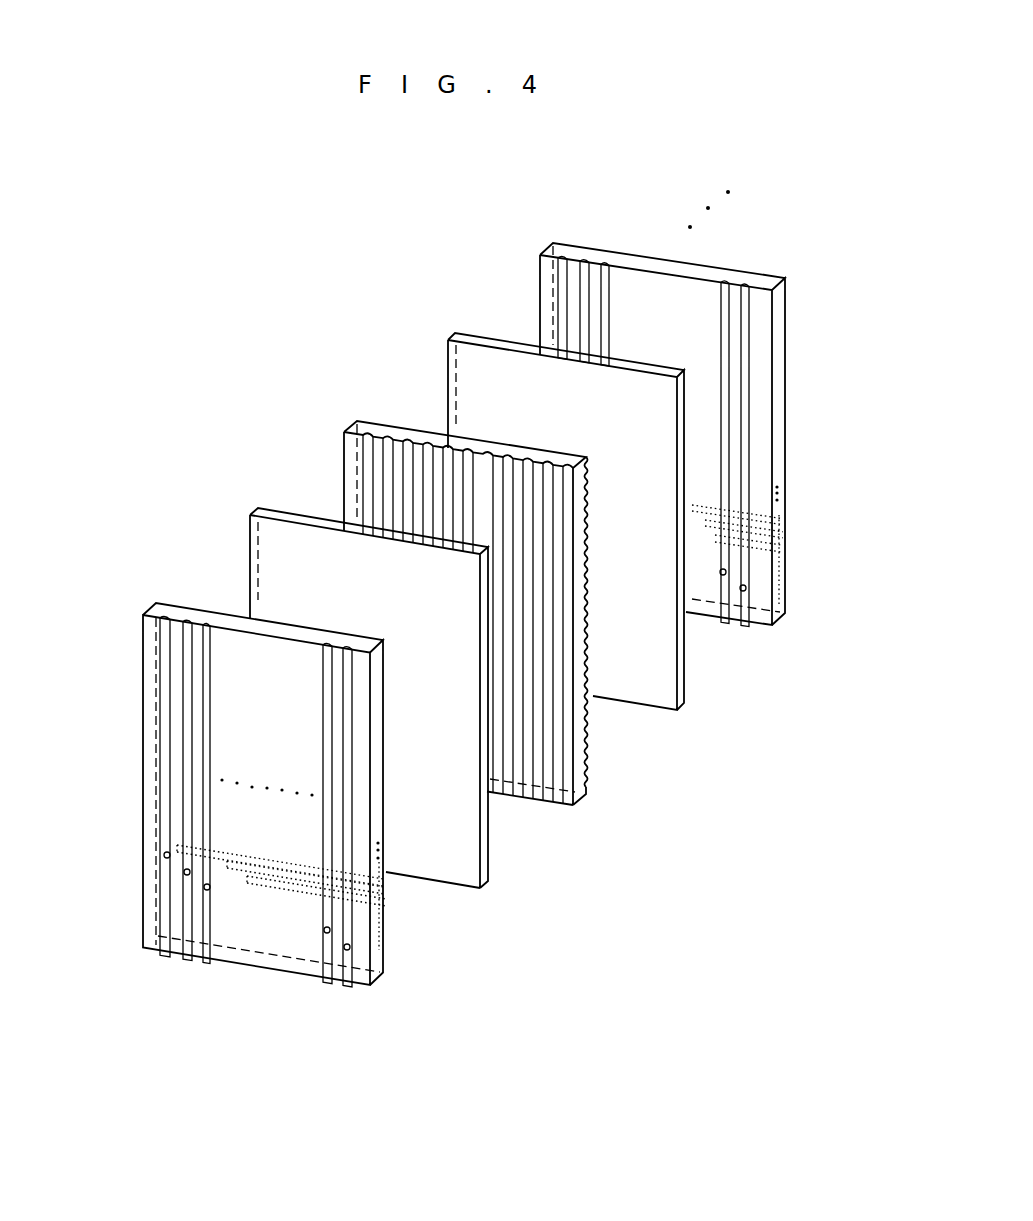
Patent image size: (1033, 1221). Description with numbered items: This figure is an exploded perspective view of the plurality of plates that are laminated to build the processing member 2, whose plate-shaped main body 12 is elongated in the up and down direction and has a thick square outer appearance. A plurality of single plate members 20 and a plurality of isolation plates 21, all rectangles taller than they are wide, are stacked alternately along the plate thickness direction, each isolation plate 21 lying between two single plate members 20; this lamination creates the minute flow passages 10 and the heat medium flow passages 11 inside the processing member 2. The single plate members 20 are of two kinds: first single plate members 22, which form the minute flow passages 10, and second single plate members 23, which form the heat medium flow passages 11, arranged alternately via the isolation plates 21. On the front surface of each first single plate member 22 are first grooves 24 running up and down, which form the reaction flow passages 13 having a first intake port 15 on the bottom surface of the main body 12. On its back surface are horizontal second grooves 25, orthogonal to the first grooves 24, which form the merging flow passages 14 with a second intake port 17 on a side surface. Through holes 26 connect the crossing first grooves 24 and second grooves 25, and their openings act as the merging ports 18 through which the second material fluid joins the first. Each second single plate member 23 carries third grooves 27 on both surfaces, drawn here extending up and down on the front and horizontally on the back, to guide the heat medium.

The processing member 2 is at (292, 244).
The minute flow passages 10 is at (797, 683).
The heat medium flow passages 11 is at (475, 654).
The main body 12 is at (553, 244).
The reaction flow passages 13 is at (744, 592).
The merging flow passages 14 is at (772, 593).
The first intake port 15 is at (345, 979).
The second intake port 17 is at (386, 945).
The merging port 18 is at (327, 974).
The single plate members 20 is at (131, 516).
The isolation plates 21 is at (454, 334).
The first single plate members 22 is at (150, 603).
The second single plate members 23 is at (355, 425).
The first grooves 24 is at (170, 719).
The second grooves 25 is at (253, 890).
The through holes 26 is at (164, 857).
The third grooves 27 is at (590, 738).